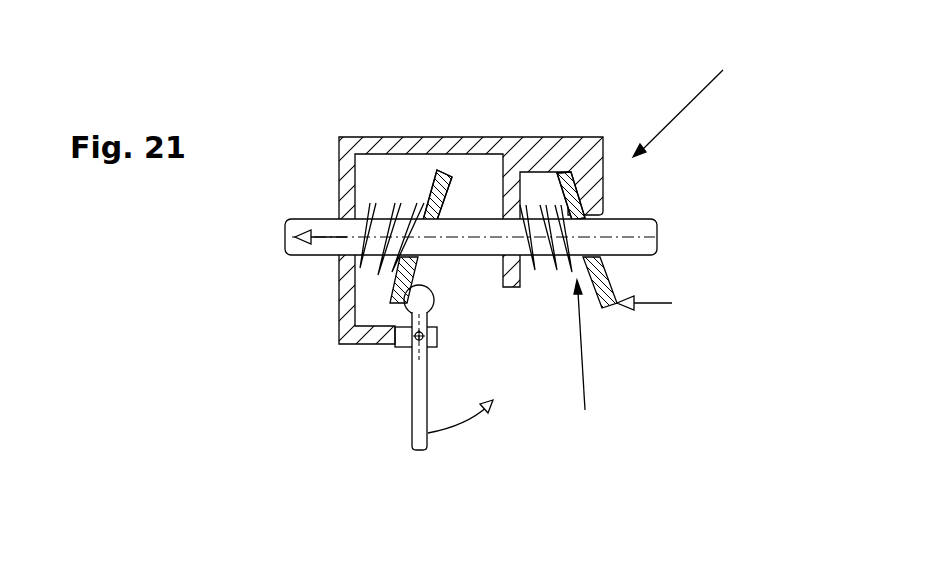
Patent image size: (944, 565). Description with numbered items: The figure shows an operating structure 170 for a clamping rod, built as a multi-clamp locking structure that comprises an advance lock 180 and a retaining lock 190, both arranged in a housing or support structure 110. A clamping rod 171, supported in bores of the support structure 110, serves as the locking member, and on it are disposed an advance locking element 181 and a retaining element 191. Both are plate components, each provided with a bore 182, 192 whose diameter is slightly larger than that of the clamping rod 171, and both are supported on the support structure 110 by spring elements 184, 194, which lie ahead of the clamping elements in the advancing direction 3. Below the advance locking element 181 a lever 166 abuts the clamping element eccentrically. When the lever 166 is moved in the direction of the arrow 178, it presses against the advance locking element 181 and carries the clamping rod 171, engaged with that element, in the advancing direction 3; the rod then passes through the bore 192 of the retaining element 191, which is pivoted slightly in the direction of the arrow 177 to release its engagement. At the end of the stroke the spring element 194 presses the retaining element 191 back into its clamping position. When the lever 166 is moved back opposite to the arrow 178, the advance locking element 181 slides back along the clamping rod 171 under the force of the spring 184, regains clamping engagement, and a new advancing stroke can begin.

The support structure 110 is at (352, 152).
The advance lock 180 is at (408, 192).
The advance locking element 181 is at (439, 186).
The clamping rod 171 is at (463, 228).
The spring element 194 is at (540, 208).
The bore 192 is at (580, 215).
The operating structure 170 is at (701, 96).
The advancing direction 3 is at (320, 237).
The spring element 184 is at (380, 252).
The bore 182 is at (406, 306).
The lever 166 is at (420, 405).
The arrow 178 is at (462, 427).
The retaining lock 190 is at (585, 410).
The retaining element 191 is at (603, 297).
The arrow 177 is at (650, 305).